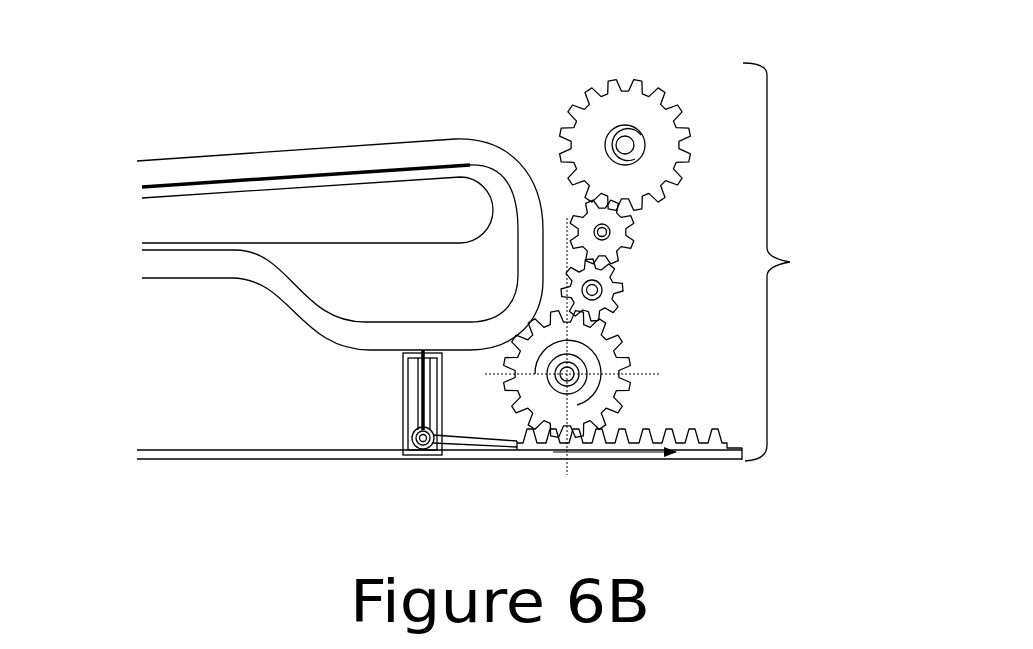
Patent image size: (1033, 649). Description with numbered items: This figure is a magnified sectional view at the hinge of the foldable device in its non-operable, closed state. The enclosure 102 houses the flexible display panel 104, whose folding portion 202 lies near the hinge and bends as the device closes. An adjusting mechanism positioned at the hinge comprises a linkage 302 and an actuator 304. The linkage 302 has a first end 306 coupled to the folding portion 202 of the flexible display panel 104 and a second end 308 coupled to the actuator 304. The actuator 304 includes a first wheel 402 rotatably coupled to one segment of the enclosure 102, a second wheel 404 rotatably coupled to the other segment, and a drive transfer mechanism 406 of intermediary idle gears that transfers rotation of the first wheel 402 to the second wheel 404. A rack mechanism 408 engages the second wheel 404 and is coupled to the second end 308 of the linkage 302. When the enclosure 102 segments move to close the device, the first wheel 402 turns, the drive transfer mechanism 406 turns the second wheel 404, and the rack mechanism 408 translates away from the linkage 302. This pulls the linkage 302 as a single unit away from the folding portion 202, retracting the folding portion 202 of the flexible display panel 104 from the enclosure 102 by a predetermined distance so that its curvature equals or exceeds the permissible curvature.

The enclosure 102 is at (370, 181).
The flexible display panel 104 is at (237, 265).
The folding portion 202 is at (440, 352).
The linkage 302 is at (400, 422).
The actuator 304 is at (770, 240).
The first end 306 is at (418, 352).
The second end 308 is at (517, 450).
The first wheel 402 is at (605, 115).
The second wheel 404 is at (535, 380).
The drive transfer mechanism 406 is at (577, 220).
The rack mechanism 408 is at (650, 442).